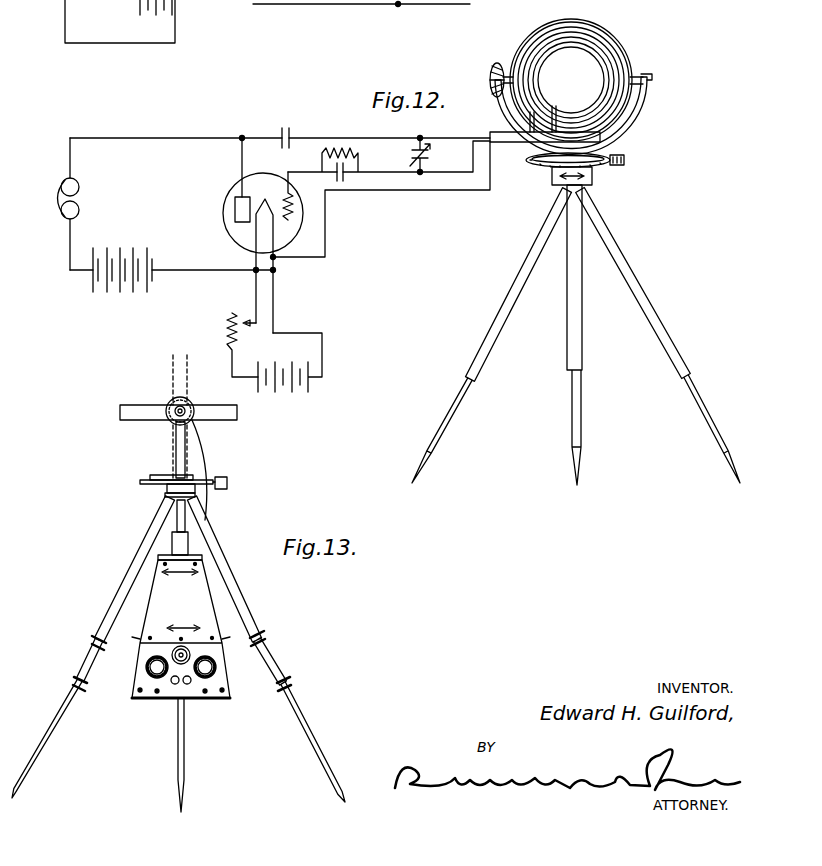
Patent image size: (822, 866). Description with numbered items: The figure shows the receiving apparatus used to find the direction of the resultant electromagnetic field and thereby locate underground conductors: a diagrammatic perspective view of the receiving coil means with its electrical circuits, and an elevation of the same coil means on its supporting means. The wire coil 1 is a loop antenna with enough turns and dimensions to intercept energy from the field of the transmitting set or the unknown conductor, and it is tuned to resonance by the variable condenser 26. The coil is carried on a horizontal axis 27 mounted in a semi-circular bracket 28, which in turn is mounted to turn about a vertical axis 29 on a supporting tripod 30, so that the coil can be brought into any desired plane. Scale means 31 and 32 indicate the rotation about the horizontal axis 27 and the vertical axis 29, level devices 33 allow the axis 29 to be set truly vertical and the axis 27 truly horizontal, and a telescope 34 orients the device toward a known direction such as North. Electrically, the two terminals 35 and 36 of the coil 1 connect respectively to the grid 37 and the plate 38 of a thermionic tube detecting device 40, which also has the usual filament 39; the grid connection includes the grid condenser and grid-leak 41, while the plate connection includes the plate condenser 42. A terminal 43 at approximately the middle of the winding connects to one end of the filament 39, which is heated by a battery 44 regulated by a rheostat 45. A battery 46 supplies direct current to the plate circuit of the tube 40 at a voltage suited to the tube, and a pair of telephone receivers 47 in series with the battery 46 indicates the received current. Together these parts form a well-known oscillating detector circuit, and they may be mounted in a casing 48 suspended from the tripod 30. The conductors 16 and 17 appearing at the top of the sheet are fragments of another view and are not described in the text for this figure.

In FIG. 12, the wire coil 1 is at (607, 32).
In FIG. 13, the wire coil 1 is at (237, 411).
In FIG. 12, the conductor 16 is at (298, 5).
In FIG. 12, the conductor 17 is at (427, 5).
In FIG. 12, the variable condenser 26 is at (428, 160).
In FIG. 12, the horizontal axis 27 is at (645, 76).
In FIG. 13, the horizontal axis 27 is at (170, 420).
In FIG. 12, the semi-circular bracket 28 is at (648, 98).
In FIG. 13, the semi-circular bracket 28 is at (185, 450).
In FIG. 12, the vertical axis 29 is at (592, 172).
In FIG. 13, the vertical axis 29 is at (222, 476).
In FIG. 12, the supporting tripod 30 is at (605, 228).
In FIG. 13, the supporting tripod 30 is at (196, 542).
In FIG. 12, the scale means 31 is at (493, 63).
In FIG. 13, the scale means 31 is at (190, 402).
In FIG. 12, the scale means 32 is at (540, 167).
In FIG. 13, the scale means 32 is at (150, 484).
In FIG. 12, the level devices 33 is at (624, 160).
In FIG. 13, the telescope 34 is at (170, 399).
In FIG. 12, the terminal 35 is at (600, 140).
In FIG. 12, the terminal 36 is at (554, 106).
In FIG. 12, the grid 37 is at (292, 215).
In FIG. 12, the plate 38 is at (235, 208).
In FIG. 12, the filament 39 is at (258, 212).
In FIG. 12, the thermionic tube detecting device 40 is at (298, 238).
In FIG. 12, the grid condenser and grid-leak 41 is at (338, 128).
In FIG. 12, the plate condenser 42 is at (280, 130).
In FIG. 12, the terminal 43 is at (532, 110).
In FIG. 12, the battery 44 is at (292, 385).
In FIG. 12, the rheostat 45 is at (226, 323).
In FIG. 12, the battery 46 is at (128, 292).
In FIG. 12, the telephone receivers 47 is at (80, 188).
In FIG. 13, the casing 48 is at (212, 606).